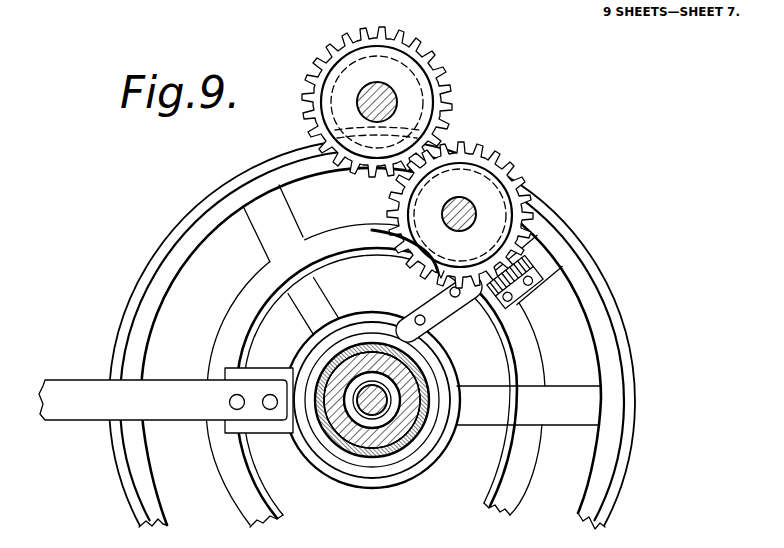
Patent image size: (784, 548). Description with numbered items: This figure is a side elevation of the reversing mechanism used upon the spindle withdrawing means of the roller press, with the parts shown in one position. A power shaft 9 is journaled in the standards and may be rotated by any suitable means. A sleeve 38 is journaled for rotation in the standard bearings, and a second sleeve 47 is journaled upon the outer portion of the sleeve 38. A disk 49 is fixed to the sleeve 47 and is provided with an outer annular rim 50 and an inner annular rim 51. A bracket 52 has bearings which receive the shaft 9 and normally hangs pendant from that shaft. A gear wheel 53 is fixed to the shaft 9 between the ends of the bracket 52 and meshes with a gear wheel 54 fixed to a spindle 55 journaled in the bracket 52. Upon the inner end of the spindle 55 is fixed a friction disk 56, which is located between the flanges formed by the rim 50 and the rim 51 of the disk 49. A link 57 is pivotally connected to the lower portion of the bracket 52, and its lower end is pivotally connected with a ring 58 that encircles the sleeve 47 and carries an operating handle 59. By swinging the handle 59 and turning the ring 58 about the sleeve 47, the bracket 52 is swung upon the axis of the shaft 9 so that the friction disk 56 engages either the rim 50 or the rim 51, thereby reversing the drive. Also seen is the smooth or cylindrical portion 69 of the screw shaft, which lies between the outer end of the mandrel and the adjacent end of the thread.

The power shaft 9 is at (398, 94).
The sleeve 38 is at (373, 453).
The sleeve 47 is at (340, 453).
The disk 49 is at (627, 367).
The outer annular rim 50 is at (623, 303).
The inner annular rim 51 is at (510, 473).
The bracket 52 is at (437, 138).
The gear wheel 53 is at (440, 94).
The gear wheel 54 is at (522, 242).
The spindle 55 is at (475, 205).
The friction disk 56 is at (407, 243).
The link 57 is at (440, 283).
The ring 58 is at (427, 458).
The operating handle 59 is at (178, 427).
The smooth or cylindrical portion 69 is at (387, 392).